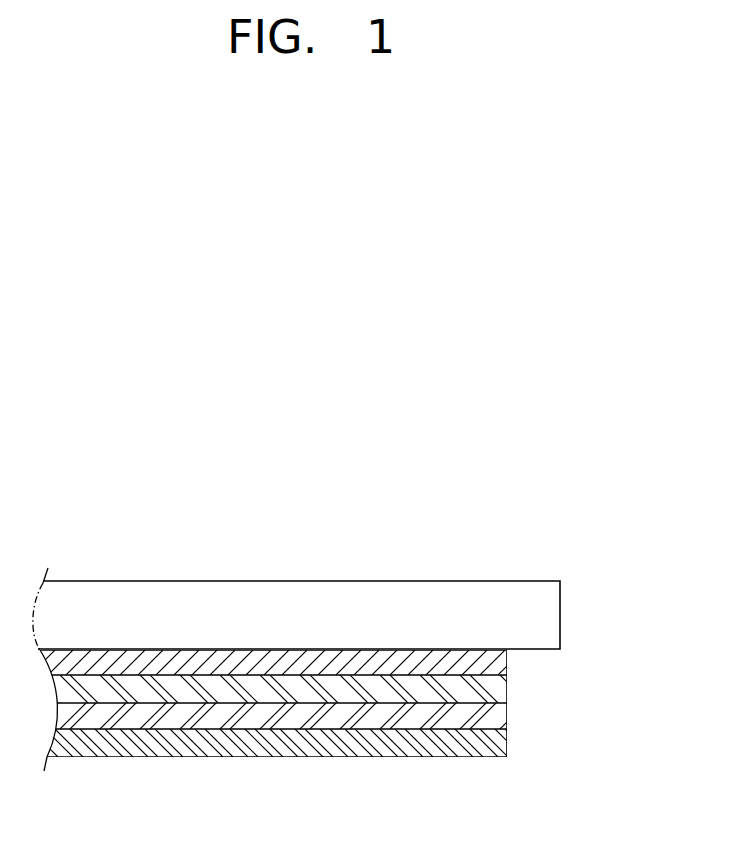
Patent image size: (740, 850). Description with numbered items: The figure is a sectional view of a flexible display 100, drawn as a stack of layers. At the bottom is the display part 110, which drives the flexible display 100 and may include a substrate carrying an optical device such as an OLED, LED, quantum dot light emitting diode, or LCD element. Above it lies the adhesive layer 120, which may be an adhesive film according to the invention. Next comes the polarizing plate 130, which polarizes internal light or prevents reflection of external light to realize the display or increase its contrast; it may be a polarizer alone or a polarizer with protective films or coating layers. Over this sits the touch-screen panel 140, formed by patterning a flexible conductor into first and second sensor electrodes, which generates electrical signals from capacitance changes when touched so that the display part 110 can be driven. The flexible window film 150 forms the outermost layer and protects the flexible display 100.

The flexible display 100 is at (473, 566).
The display part 110 is at (498, 742).
The adhesive layer 120 is at (498, 714).
The polarizing plate 130 is at (498, 689).
The touch-screen panel 140 is at (498, 662).
The flexible window film 150 is at (547, 615).